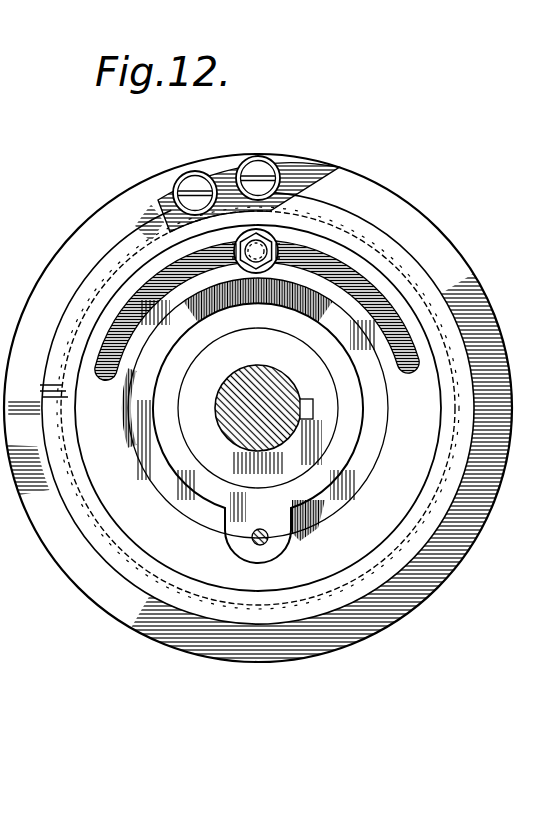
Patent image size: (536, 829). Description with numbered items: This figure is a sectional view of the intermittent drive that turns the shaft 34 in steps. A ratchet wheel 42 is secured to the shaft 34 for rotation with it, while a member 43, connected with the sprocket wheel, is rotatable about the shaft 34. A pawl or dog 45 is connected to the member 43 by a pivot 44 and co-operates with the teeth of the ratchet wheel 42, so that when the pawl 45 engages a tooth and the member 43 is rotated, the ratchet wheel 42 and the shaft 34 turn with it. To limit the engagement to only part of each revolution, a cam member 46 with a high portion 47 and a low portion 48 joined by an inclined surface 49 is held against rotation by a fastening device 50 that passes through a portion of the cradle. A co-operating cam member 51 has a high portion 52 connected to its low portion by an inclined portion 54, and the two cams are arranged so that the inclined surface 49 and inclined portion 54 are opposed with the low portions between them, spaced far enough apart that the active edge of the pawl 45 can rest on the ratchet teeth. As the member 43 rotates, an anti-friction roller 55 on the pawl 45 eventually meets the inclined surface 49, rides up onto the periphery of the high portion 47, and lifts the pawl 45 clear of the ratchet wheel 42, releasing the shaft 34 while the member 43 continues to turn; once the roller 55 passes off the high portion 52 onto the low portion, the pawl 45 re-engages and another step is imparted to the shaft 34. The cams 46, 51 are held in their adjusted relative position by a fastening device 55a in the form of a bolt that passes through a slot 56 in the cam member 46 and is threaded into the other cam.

The shaft 34 is at (256, 370).
The ratchet wheel 42 is at (107, 267).
The member 43 is at (433, 240).
The pivot 44 is at (278, 175).
The pawl 45 is at (165, 210).
The cam member 46 is at (148, 536).
The high portion 47 is at (56, 490).
The low portion 48 is at (97, 290).
The inclined surface 49 is at (47, 355).
The fastening device 50 is at (266, 542).
The cam member 51 is at (110, 375).
The high portion 52 is at (388, 230).
The inclined portion 54 is at (286, 202).
The anti-friction roller 55 is at (188, 182).
The fastening device 55a is at (204, 290).
The slot 56 is at (422, 372).